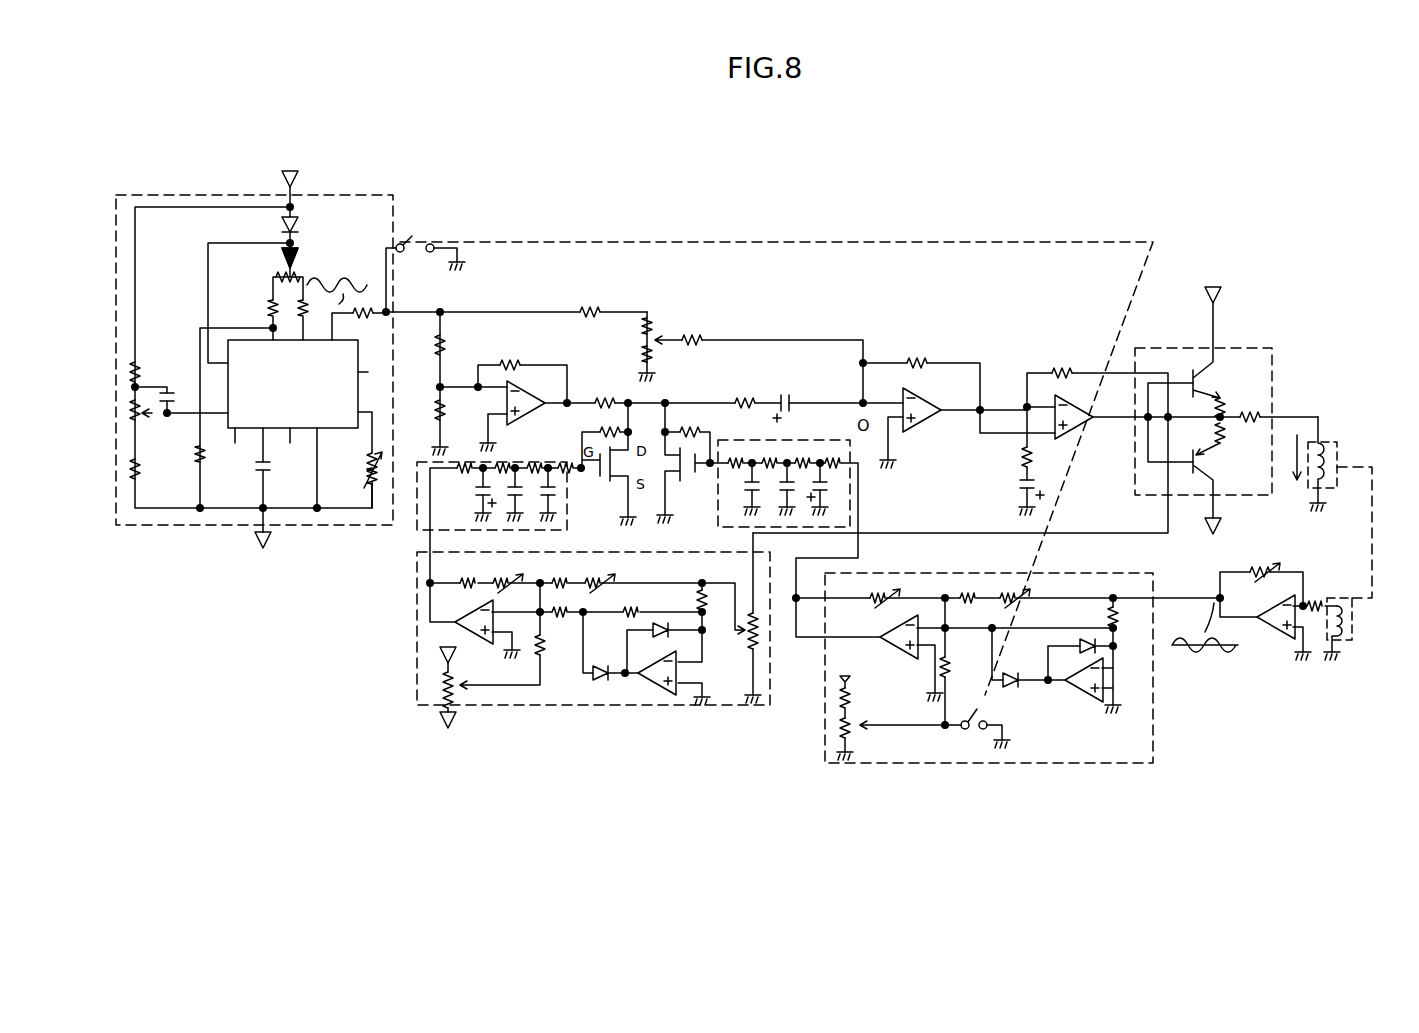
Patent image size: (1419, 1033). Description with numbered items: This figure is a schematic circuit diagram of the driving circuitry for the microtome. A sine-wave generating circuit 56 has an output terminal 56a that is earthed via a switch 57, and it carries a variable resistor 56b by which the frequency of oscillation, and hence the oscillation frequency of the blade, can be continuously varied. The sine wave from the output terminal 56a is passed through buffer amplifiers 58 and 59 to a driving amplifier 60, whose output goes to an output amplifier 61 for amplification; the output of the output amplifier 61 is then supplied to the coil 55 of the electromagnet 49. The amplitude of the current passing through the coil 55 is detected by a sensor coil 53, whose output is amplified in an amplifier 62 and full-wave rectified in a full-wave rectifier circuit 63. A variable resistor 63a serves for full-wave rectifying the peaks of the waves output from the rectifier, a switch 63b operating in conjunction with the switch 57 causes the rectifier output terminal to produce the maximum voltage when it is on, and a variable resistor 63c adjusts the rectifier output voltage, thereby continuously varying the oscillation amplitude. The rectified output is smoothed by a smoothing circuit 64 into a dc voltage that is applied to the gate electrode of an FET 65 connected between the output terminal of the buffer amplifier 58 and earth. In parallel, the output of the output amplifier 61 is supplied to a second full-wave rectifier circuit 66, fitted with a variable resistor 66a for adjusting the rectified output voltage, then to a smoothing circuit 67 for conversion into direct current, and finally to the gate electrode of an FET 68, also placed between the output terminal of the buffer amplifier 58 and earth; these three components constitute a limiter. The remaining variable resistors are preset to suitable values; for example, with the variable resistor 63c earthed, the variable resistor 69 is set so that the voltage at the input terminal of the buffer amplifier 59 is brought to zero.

The electromagnet 49 is at (1342, 499).
The sensor coil 53 is at (1345, 637).
The coil 55 is at (1328, 446).
The sine-wave generating circuit 56 is at (253, 352).
The output terminal 56a is at (390, 310).
The variable resistor 56b is at (130, 416).
The switch 57 is at (410, 241).
The buffer amplifier 58 is at (512, 382).
The buffer amplifier 59 is at (935, 388).
The driving amplifier 60 is at (1068, 396).
The output amplifier 61 is at (1272, 376).
The amplifier 62 is at (1274, 628).
The full-wave rectifier circuit 63 is at (1000, 710).
The variable resistor 63a is at (1012, 606).
The switch 63b is at (965, 741).
The variable resistor 63c is at (835, 741).
The smoothing circuit 64 is at (812, 440).
The FET 65 is at (702, 462).
The full-wave rectifier circuit 66 is at (577, 658).
The variable resistor 66a is at (440, 682).
The smoothing circuit 67 is at (425, 530).
The FET 68 is at (690, 428).
The variable resistor 69 is at (655, 322).